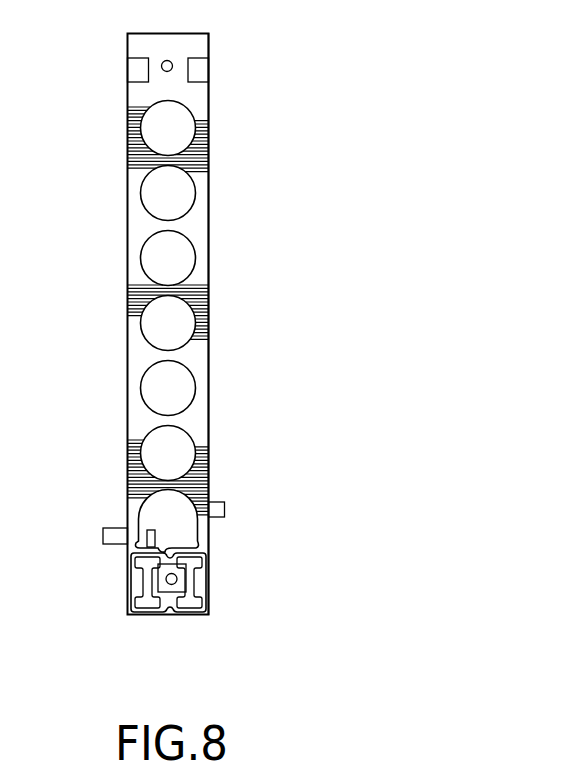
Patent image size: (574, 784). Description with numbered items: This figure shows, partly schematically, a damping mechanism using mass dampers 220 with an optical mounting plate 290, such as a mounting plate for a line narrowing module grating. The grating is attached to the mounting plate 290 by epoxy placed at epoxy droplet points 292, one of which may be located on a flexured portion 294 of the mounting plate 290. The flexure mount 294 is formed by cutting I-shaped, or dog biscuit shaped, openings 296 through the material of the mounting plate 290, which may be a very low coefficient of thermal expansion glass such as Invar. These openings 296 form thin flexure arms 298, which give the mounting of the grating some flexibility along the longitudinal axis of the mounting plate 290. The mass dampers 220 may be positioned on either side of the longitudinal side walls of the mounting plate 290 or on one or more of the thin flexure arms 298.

The mounting plate 290 is at (211, 366).
The epoxy droplet points 292 is at (177, 77).
The mass damper 220 is at (111, 527).
The thin flexure arms 298 is at (197, 547).
The flexured portion 294 is at (128, 573).
The I-shaped openings 296 is at (147, 607).